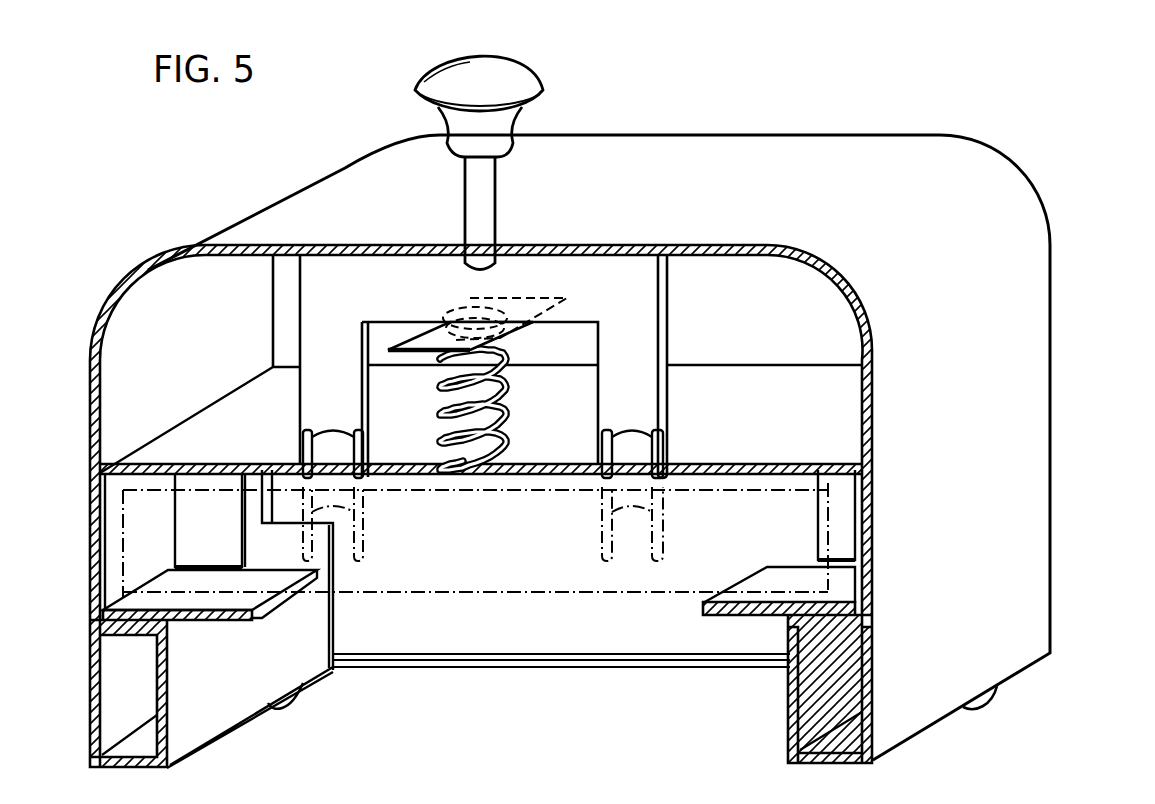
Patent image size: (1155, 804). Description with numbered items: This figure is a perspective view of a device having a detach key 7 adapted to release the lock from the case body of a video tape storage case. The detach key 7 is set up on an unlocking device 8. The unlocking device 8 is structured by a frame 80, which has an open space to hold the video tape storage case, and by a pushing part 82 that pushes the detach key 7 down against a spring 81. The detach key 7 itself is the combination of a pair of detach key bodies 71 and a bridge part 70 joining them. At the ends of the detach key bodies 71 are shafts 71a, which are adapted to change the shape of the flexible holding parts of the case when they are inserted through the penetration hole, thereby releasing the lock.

The detach key 7 is at (676, 273).
The unlocking device 8 is at (934, 124).
The bridge part 70 is at (412, 272).
The detach key bodies 71 is at (326, 354).
The shafts 71a is at (345, 450).
The frame 80 is at (1037, 445).
The spring 81 is at (506, 340).
The pushing part 82 is at (520, 78).